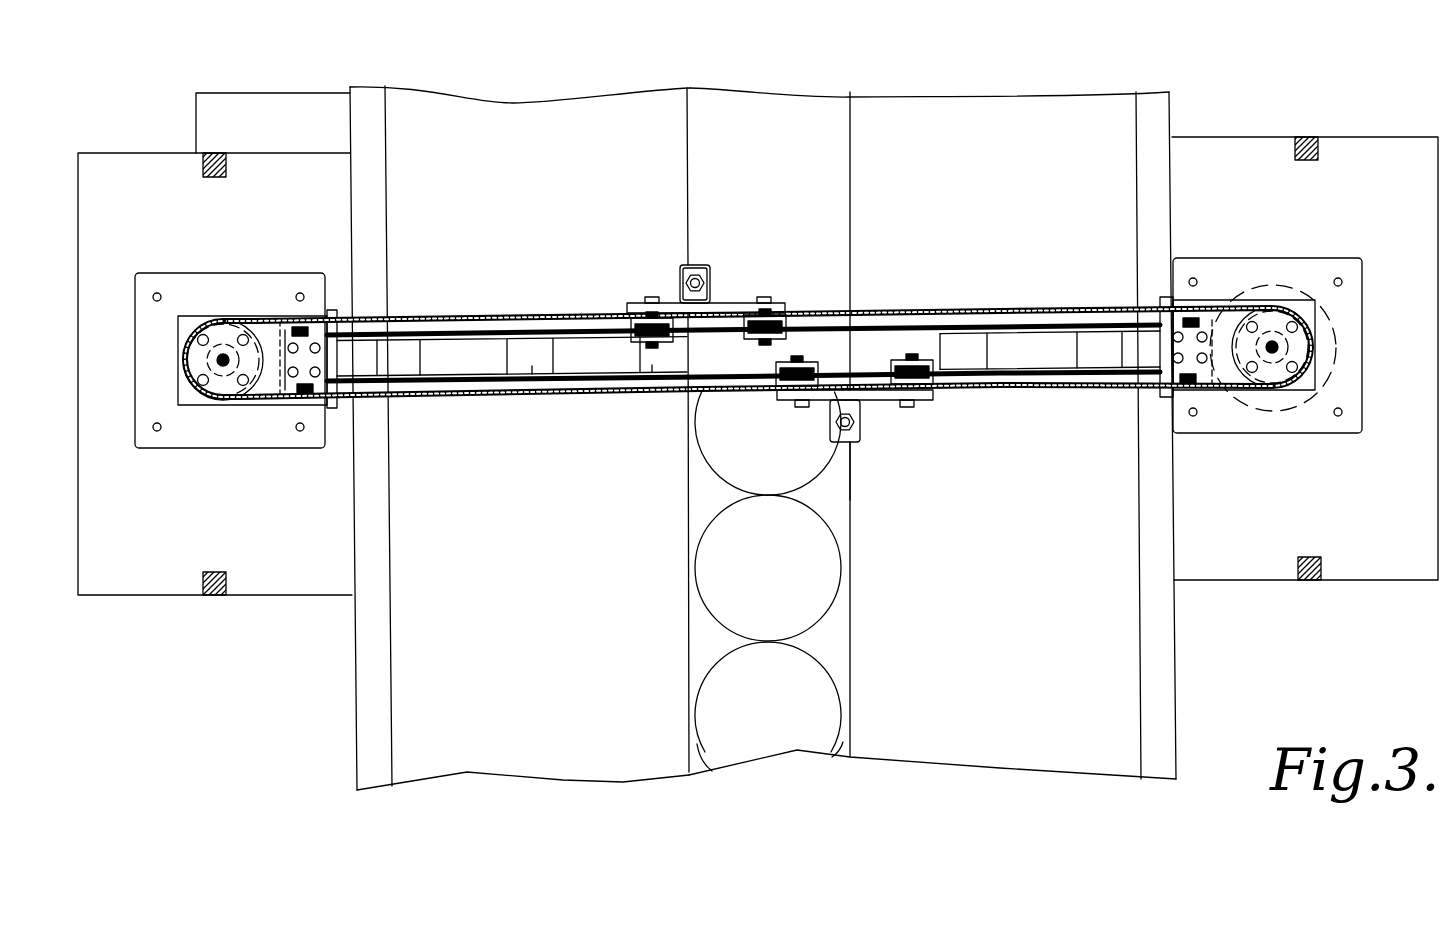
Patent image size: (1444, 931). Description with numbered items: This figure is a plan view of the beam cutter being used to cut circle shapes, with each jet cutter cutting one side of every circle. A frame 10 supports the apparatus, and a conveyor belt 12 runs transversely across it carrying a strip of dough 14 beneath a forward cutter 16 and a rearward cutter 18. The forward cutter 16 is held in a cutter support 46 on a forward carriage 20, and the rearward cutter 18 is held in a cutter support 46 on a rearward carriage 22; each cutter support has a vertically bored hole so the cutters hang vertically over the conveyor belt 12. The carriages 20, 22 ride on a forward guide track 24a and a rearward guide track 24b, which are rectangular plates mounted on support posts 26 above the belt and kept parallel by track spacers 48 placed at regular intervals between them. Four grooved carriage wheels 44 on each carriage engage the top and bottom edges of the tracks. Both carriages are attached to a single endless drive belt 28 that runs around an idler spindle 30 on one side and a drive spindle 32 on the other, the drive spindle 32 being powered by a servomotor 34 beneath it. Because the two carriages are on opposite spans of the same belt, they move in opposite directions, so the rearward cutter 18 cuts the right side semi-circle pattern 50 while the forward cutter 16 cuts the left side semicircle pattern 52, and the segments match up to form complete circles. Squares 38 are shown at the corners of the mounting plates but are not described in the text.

The frame 10 is at (1380, 137).
The conveyor belt 12 is at (1055, 135).
The dough 14 is at (770, 115).
The forward cutter 16 is at (848, 442).
The rearward cutter 18 is at (697, 268).
The forward carriage 20 is at (815, 402).
The rearward carriage 22 is at (740, 302).
The forward guide track 24a is at (1030, 387).
The rearward guide track 24b is at (1022, 310).
The support posts 26 is at (297, 325).
The endless drive belt 28 is at (433, 397).
The idler spindle 30 is at (228, 395).
The drive spindle 32 is at (1265, 385).
The servomotor 34 is at (1300, 430).
The mounting bolt 38 is at (205, 160).
The carriage wheels 44 is at (640, 323).
The cutter supports 46 is at (682, 272).
The track spacers 48 is at (402, 345).
The right side semi-circle pattern 50 is at (689, 772).
The left side semicircle pattern 52 is at (849, 757).